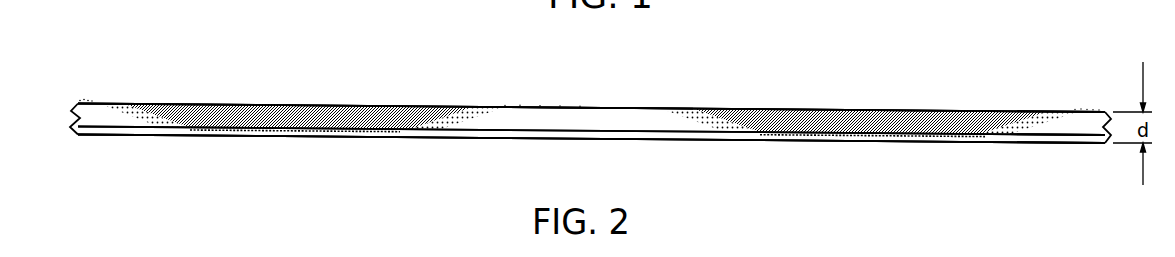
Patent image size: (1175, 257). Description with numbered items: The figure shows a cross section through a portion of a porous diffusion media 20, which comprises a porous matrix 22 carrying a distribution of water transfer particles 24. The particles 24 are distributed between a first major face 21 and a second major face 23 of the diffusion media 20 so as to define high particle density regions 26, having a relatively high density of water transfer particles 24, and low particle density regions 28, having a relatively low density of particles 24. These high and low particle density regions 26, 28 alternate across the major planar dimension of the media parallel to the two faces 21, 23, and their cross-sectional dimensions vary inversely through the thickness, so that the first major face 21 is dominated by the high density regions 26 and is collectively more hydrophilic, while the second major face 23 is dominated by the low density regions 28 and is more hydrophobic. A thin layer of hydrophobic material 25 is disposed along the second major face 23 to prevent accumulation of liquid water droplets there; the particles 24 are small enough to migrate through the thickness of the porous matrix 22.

The porous diffusion media 20 is at (569, 74).
The first major face 21 is at (167, 104).
The porous matrix 22 is at (72, 118).
The second major face 23 is at (247, 136).
The water transfer particles 24 is at (513, 107).
The hydrophobic material 25 is at (758, 140).
The high particle density regions 26 is at (589, 75).
The low particle density regions 28 is at (583, 187).